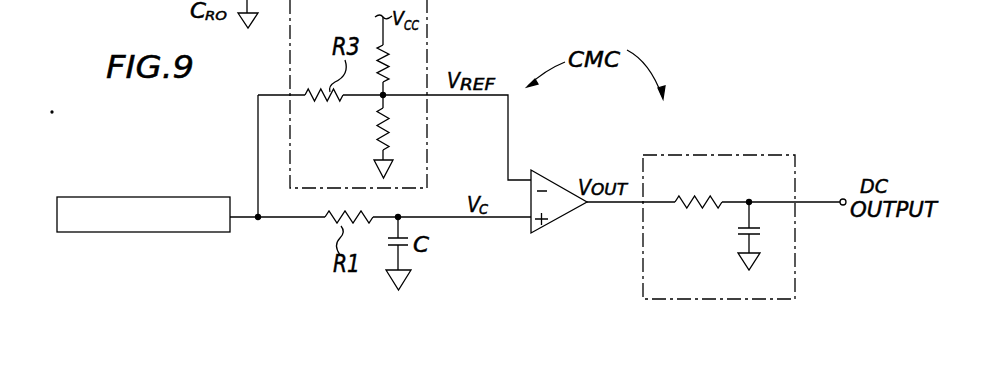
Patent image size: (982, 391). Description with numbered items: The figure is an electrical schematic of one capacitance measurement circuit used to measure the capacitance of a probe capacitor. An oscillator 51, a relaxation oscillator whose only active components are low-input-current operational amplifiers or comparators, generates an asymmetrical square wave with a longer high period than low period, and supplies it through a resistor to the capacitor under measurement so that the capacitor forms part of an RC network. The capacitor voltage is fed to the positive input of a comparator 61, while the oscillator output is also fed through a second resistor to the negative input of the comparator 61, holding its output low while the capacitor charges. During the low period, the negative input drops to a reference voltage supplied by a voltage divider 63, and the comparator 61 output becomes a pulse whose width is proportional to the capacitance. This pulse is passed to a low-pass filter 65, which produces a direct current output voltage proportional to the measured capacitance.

The oscillator 51 is at (146, 197).
The comparator 61 is at (549, 225).
The voltage divider 63 is at (372, 124).
The low-pass filter 65 is at (716, 300).